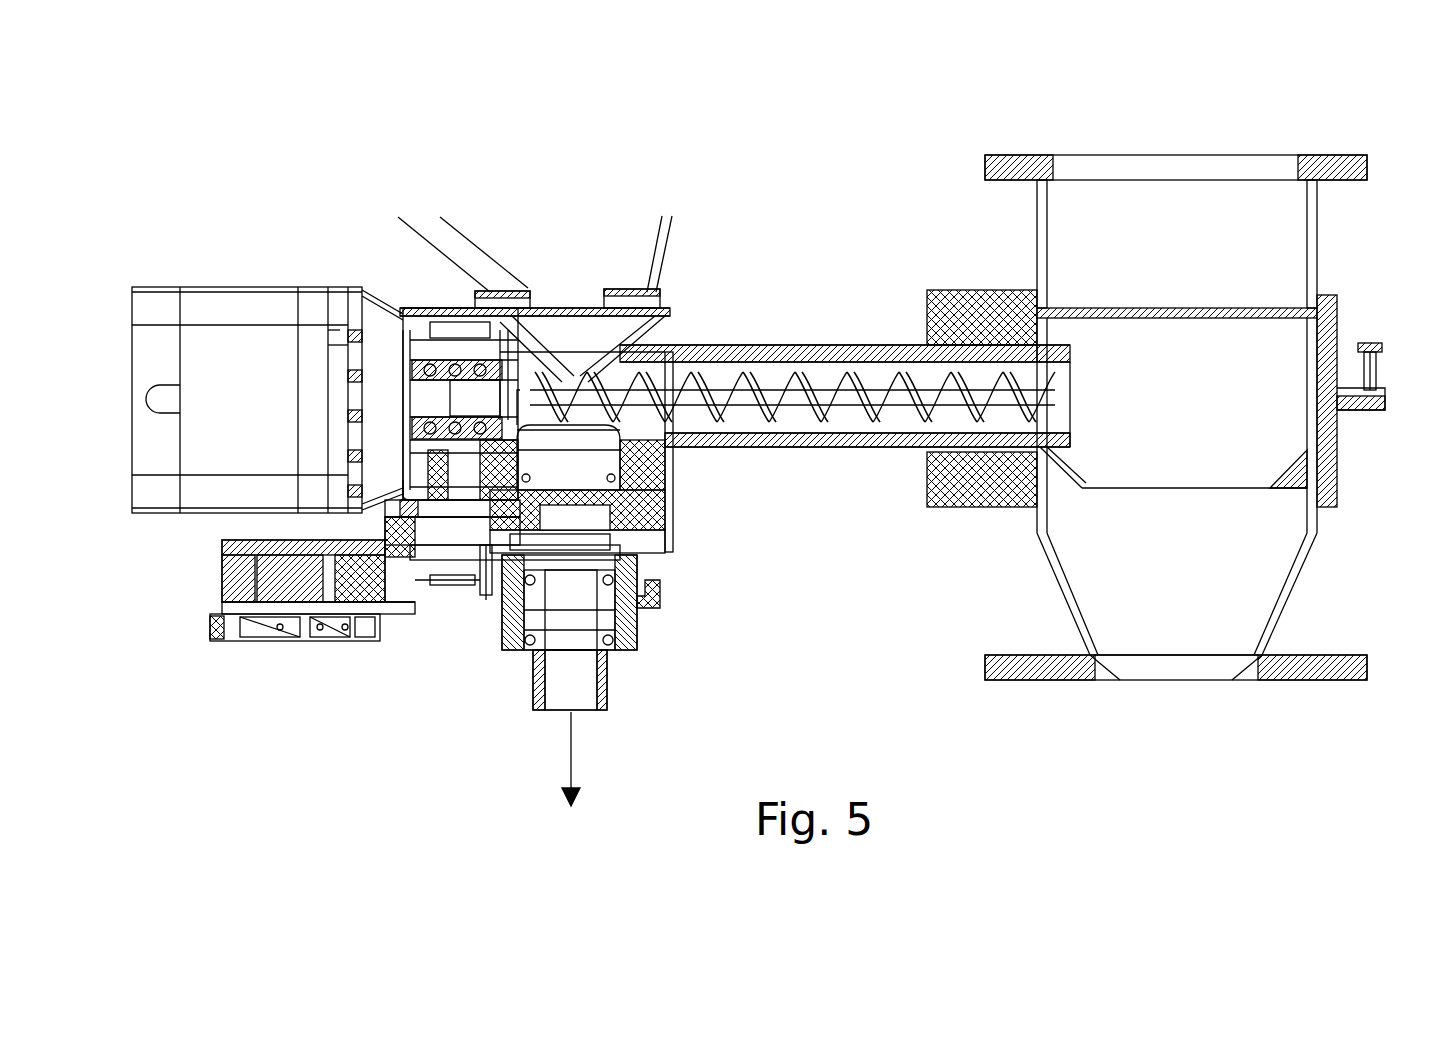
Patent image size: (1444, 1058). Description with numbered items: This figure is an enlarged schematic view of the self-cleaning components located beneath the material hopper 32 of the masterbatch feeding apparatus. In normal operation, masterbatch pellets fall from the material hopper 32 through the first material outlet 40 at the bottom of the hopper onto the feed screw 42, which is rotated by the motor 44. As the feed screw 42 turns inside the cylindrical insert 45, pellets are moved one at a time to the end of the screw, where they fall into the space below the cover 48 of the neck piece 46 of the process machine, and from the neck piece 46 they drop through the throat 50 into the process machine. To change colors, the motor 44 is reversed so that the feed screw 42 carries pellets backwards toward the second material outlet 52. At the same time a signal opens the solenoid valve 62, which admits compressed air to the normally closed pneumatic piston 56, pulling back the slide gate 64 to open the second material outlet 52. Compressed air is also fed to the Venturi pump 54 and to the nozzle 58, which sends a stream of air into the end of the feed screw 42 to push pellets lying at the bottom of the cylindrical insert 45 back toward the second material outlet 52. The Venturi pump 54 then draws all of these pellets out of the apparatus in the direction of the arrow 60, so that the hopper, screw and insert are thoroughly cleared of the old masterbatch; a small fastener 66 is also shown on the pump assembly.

The material hopper 32 is at (615, 243).
The first material outlet 40 is at (580, 372).
The feed screw 42 is at (772, 383).
The motor 44 is at (135, 447).
The cylindrical insert 45 is at (831, 450).
The neck piece 46 is at (1196, 153).
The cover 48 is at (1262, 312).
The throat 50 is at (1292, 600).
The second material outlet 52 is at (590, 473).
The Venturi pump 54 is at (590, 610).
The pneumatic piston 56 is at (224, 580).
The nozzle 58 is at (1384, 372).
The arrow 60 is at (565, 763).
The solenoid valve 62 is at (265, 642).
The slide gate 64 is at (487, 565).
The fastener 66 is at (662, 600).